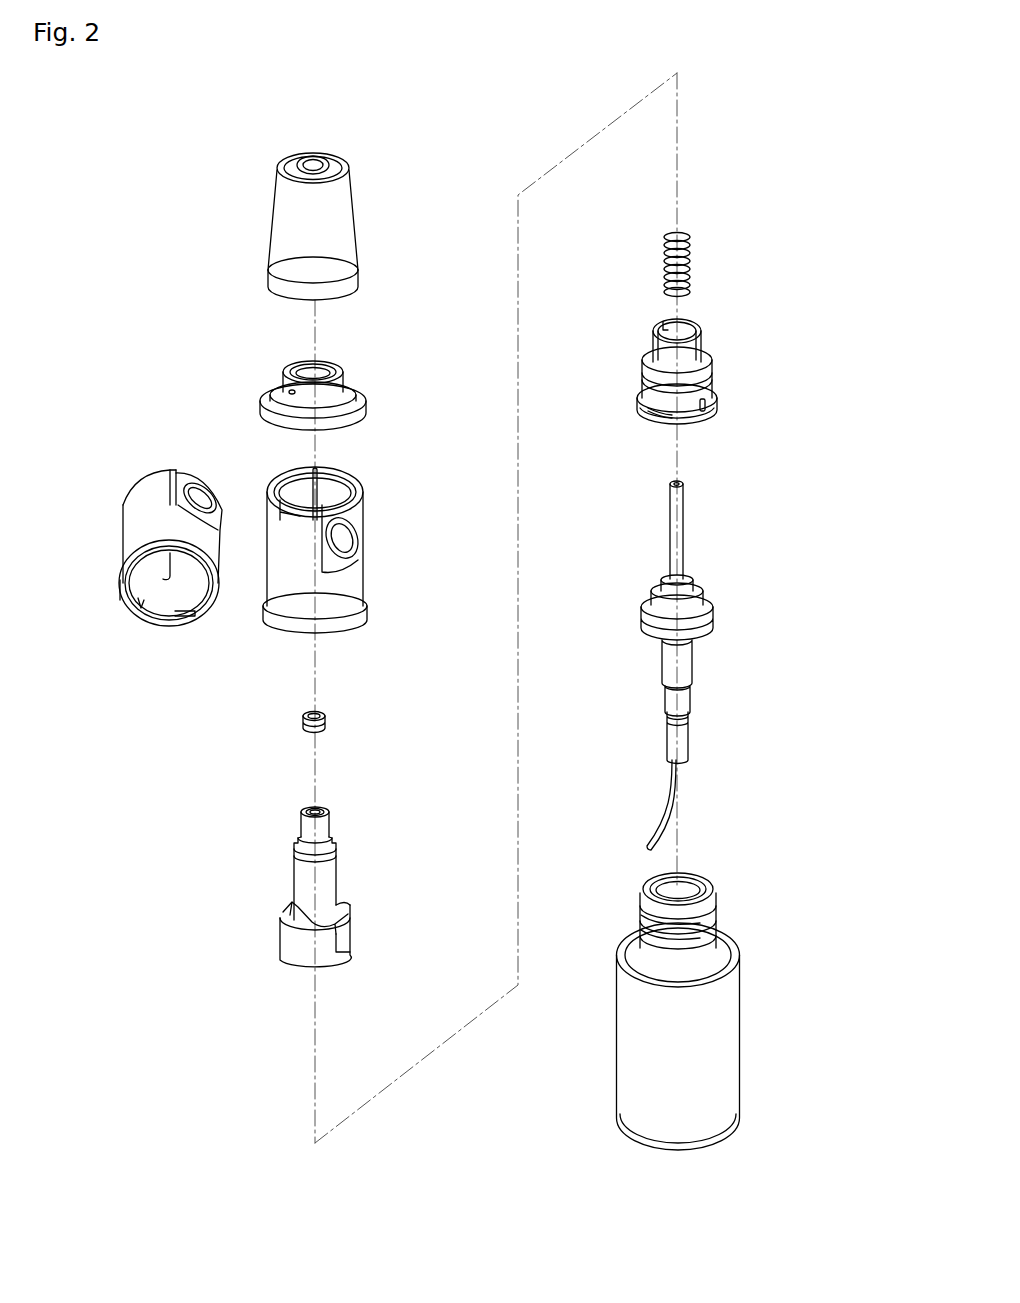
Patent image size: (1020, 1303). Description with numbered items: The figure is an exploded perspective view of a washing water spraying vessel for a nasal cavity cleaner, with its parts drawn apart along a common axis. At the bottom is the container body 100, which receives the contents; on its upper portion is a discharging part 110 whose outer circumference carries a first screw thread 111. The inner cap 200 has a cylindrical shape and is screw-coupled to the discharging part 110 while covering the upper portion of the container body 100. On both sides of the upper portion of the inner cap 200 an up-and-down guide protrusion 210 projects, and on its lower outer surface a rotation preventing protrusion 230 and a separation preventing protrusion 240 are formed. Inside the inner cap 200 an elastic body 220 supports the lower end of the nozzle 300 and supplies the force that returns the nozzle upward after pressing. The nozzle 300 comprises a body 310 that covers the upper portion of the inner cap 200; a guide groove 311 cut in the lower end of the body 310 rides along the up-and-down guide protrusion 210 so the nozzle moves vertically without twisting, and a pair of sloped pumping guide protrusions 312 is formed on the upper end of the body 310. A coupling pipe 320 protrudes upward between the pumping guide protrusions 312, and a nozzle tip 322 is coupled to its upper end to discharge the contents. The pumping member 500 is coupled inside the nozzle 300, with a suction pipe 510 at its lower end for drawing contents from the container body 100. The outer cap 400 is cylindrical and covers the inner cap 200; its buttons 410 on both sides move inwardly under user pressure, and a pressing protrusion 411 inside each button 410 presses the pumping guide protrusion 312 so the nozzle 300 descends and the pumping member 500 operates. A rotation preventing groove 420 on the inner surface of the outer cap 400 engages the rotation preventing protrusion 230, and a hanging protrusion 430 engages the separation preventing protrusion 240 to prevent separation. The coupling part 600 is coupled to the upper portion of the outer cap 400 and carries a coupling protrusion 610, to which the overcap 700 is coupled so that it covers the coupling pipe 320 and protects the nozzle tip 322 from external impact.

The container body 100 is at (718, 996).
The discharging part 110 is at (705, 880).
The first screw thread 111 is at (718, 915).
The inner cap 200 is at (676, 374).
The up-and-down guide protrusion 210 is at (696, 346).
The elastic body 220 is at (693, 262).
The rotation preventing protrusion 230 is at (716, 404).
The separation preventing protrusion 240 is at (641, 408).
The nozzle 300 is at (348, 892).
The body 310 is at (346, 928).
The guide groove 311 is at (340, 952).
The pumping guide protrusion 312 is at (305, 926).
The coupling pipe 320 is at (330, 874).
The nozzle tip 322 is at (326, 720).
The outer cap 400 is at (140, 485).
The button 410 is at (345, 538).
The pressing protrusion 411 is at (325, 480).
The rotation preventing groove 420 is at (138, 620).
The hanging protrusion 430 is at (192, 620).
The pumping member 500 is at (712, 620).
The suction pipe 510 is at (680, 778).
The coupling part 600 is at (315, 395).
The coupling protrusion 610 is at (285, 387).
The overcap 700 is at (343, 222).